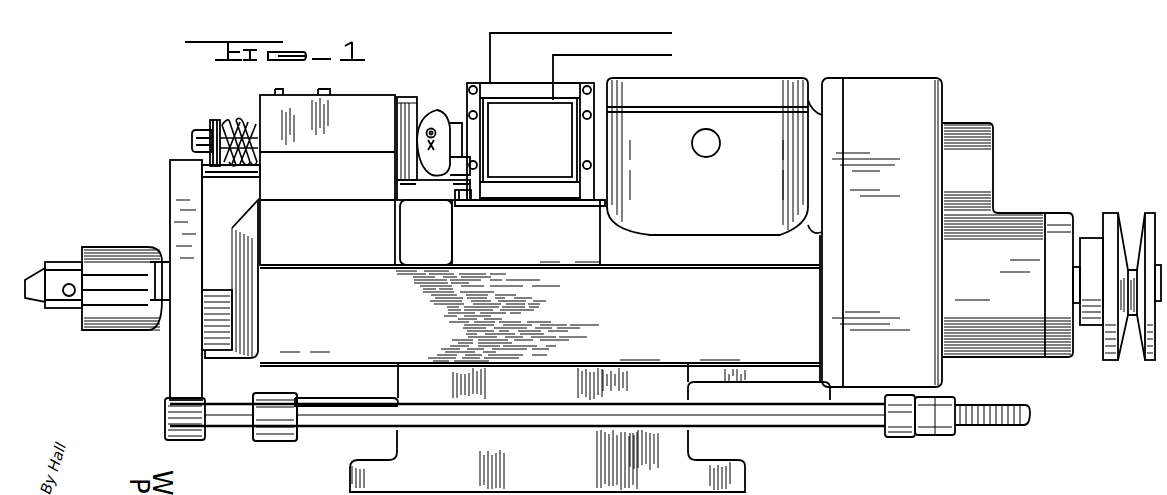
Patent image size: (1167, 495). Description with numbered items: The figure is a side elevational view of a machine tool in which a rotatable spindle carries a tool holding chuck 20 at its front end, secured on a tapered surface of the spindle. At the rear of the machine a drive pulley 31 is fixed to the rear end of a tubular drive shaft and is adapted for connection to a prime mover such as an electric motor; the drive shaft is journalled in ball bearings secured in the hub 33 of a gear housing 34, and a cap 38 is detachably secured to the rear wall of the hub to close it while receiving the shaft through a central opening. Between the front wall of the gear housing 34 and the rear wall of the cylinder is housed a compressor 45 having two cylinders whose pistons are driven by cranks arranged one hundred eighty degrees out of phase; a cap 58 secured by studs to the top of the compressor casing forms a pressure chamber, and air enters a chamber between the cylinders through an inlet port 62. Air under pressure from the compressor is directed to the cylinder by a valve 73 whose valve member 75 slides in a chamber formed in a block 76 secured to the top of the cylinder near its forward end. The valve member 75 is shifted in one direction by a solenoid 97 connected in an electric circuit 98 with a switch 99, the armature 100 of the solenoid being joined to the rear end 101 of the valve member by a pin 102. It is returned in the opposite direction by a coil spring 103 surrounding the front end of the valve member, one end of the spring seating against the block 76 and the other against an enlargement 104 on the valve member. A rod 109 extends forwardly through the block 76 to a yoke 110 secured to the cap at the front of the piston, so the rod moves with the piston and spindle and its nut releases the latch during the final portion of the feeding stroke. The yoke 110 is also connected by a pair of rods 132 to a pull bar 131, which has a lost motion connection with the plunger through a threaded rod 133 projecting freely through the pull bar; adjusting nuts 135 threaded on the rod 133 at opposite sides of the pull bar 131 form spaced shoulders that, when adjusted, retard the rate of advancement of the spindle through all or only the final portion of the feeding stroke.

The tool holding chuck 20 is at (104, 258).
The drive pulley 31 is at (1120, 228).
The hub 33 is at (1010, 230).
The gear housing 34 is at (920, 112).
The cap 38 is at (1068, 213).
The compressor 45 is at (806, 78).
The cap 58 is at (742, 88).
The inlet port 62 is at (706, 143).
The valve 73 is at (216, 118).
The valve member 75 is at (200, 130).
The block 76 is at (294, 100).
The solenoid 97 is at (530, 144).
The electric circuit 98 is at (492, 50).
The switch 99 is at (655, 52).
The armature 100 is at (455, 125).
The rear end 101 is at (433, 190).
The pin 102 is at (428, 112).
The coil spring 103 is at (240, 122).
The enlargement 104 is at (222, 168).
The rod 109 is at (455, 200).
The yoke 110 is at (175, 418).
The pull bar 131 is at (880, 430).
The rods 132 is at (802, 412).
The threaded rod 133 is at (995, 406).
The adjusting nuts 135 is at (948, 432).